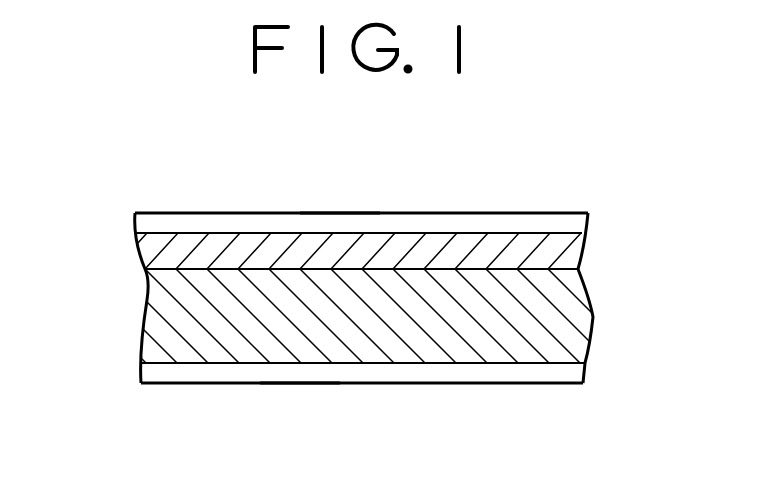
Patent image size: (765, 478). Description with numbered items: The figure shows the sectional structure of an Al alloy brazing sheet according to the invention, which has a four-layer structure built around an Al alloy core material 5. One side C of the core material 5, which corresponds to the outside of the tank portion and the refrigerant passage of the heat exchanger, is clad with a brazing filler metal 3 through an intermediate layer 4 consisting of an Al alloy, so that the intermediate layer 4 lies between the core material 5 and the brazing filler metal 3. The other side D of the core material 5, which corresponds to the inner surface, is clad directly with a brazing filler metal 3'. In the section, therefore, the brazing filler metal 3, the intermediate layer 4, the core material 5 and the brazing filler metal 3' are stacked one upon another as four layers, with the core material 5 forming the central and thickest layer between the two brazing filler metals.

The brazing filler metal 3 is at (361, 199).
The intermediate layer 4 is at (141, 252).
The Al alloy core material 5 is at (577, 315).
The brazing filler metal 3' is at (363, 401).
The side of the core material C is at (339, 210).
The other side of the core material D is at (302, 384).